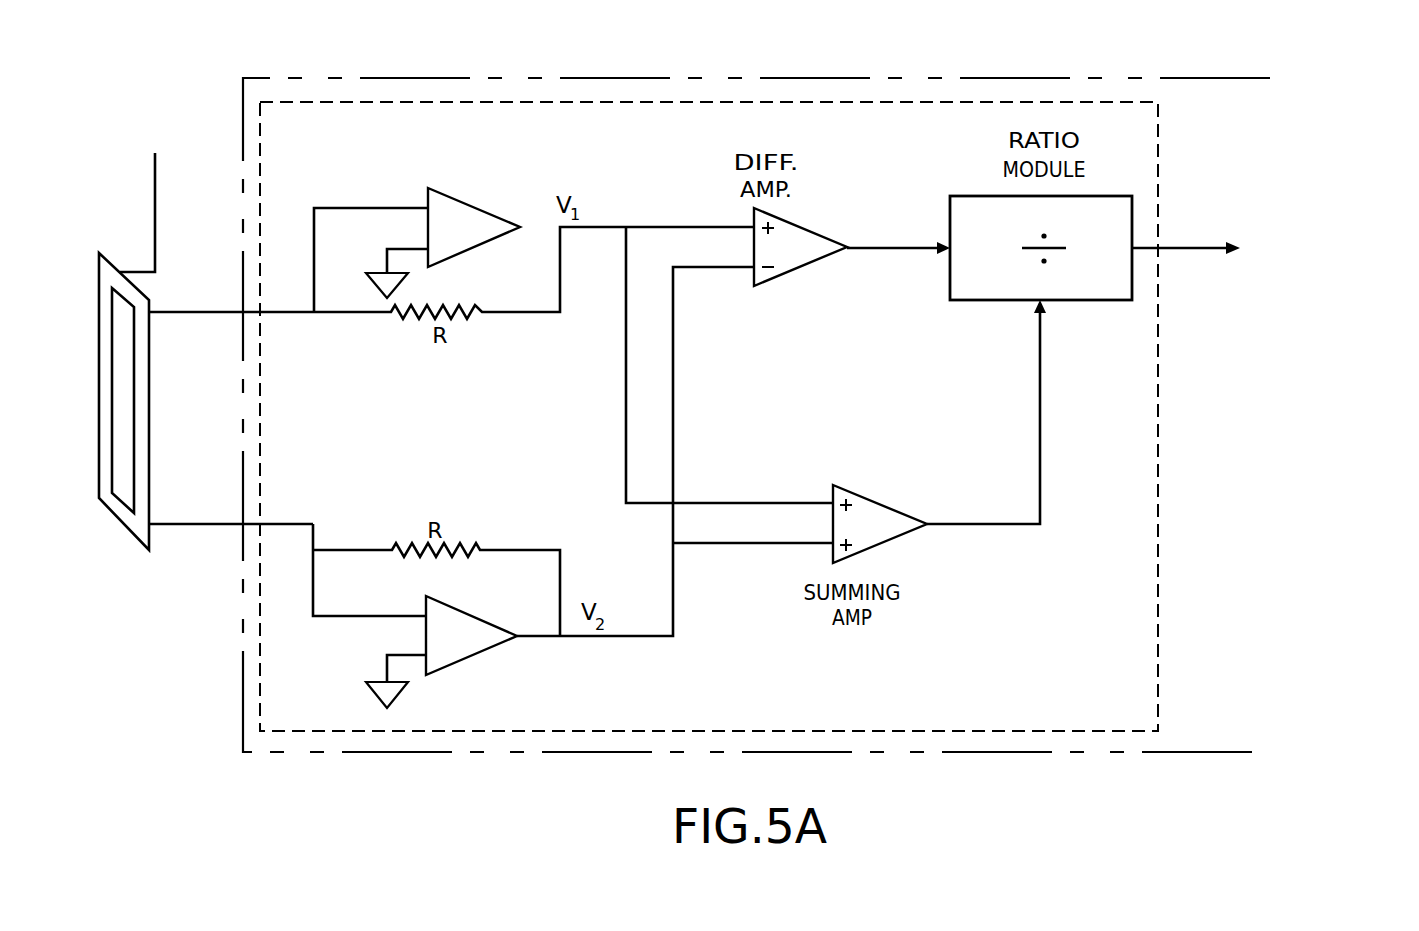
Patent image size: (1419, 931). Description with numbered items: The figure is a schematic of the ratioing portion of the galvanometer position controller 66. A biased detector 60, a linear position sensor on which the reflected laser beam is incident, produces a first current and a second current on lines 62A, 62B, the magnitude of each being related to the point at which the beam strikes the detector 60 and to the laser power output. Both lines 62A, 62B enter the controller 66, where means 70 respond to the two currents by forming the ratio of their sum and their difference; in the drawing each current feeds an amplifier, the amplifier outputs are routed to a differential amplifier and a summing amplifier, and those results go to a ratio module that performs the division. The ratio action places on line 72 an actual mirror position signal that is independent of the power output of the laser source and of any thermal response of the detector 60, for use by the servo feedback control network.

The detector 60 is at (112, 257).
The line 62A is at (227, 314).
The line 62B is at (228, 527).
The galvanometer position controller 66 is at (1220, 73).
The means for forming the ratio of the sum and difference 70 is at (1160, 372).
The line 72 is at (1213, 243).